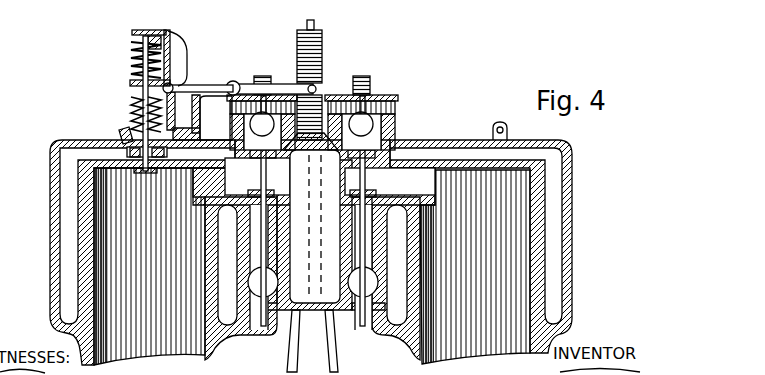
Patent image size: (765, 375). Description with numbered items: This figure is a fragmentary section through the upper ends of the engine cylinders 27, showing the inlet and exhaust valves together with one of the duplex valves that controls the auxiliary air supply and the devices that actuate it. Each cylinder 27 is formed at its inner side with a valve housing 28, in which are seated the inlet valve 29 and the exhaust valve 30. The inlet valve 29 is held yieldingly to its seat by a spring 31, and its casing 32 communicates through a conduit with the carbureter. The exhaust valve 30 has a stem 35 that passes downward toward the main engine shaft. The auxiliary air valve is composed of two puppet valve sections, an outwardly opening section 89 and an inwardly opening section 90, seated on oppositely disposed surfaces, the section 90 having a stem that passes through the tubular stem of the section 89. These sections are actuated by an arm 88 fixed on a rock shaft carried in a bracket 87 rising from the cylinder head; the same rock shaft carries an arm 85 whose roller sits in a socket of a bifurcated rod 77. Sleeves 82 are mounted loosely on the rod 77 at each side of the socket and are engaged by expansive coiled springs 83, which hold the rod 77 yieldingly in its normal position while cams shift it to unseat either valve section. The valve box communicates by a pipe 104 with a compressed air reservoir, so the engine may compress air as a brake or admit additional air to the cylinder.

The cylinder 27 is at (100, 263).
The valve housing 28 is at (330, 177).
The inlet valve 29 is at (260, 148).
The exhaust valve 30 is at (283, 208).
The spring 31 is at (262, 78).
The inlet valve casing 32 is at (253, 96).
The exhaust valve stem 35 is at (264, 328).
The bifurcated rod 77 is at (312, 341).
The sleeve 82 is at (319, 45).
The coiled spring 83 is at (318, 96).
The arm 85 is at (281, 85).
The bracket 87 is at (169, 62).
The arm 88 is at (192, 88).
The outwardly opening valve section 89 is at (150, 187).
The inwardly opening valve section 90 is at (140, 175).
The pipe 104 is at (122, 132).